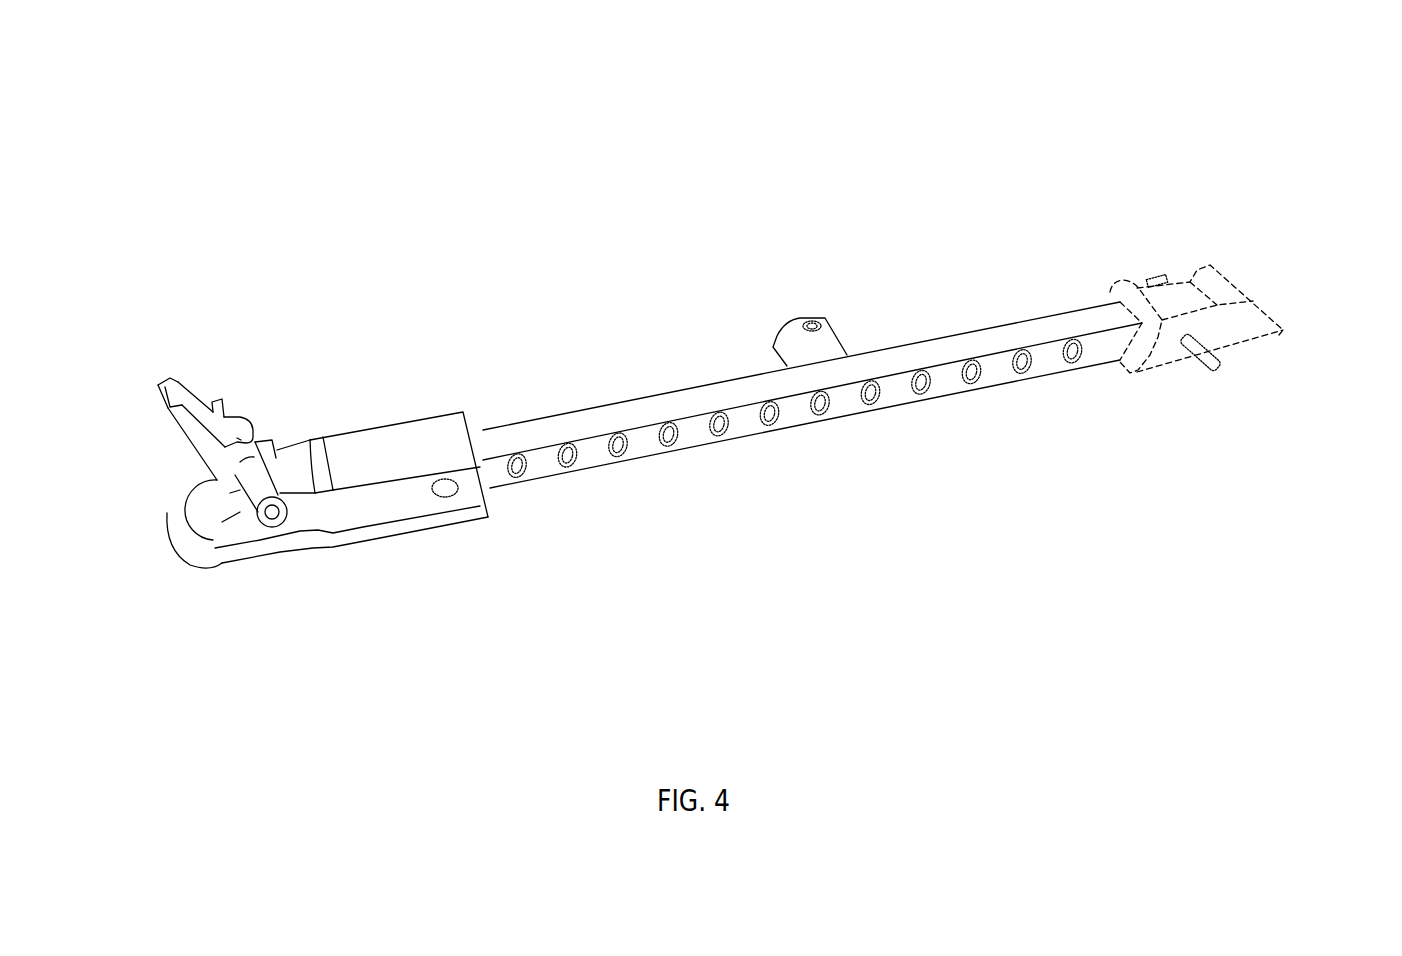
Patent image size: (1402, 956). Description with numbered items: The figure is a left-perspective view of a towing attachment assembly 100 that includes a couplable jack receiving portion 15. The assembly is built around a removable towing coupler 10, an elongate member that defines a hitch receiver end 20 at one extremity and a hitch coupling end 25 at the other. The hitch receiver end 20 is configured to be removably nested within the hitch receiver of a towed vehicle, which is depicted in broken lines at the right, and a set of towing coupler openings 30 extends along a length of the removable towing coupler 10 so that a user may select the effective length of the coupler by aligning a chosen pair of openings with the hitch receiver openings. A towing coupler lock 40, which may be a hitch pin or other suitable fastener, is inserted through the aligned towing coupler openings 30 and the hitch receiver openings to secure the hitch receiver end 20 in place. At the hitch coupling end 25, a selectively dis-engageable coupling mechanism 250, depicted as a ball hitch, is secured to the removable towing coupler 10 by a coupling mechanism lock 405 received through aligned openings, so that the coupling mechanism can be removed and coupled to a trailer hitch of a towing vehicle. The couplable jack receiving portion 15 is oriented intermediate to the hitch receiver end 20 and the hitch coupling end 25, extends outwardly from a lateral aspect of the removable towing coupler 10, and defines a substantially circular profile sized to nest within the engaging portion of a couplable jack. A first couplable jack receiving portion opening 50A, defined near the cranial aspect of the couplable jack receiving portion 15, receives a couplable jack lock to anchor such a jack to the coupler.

The towing attachment assembly 100 is at (1279, 162).
The removable towing coupler 10 is at (840, 483).
The couplable jack receiving portion 15 is at (742, 357).
The hitch receiver end 20 is at (1072, 253).
The hitch coupling end 25 is at (286, 280).
The towing coupler openings 30 is at (568, 475).
The towing coupler lock 40 is at (1215, 395).
The first couplable jack receiving portion opening 50A is at (813, 317).
The selectively dis-engageable coupling mechanism 250 is at (115, 508).
The coupling mechanism lock 405 is at (448, 512).